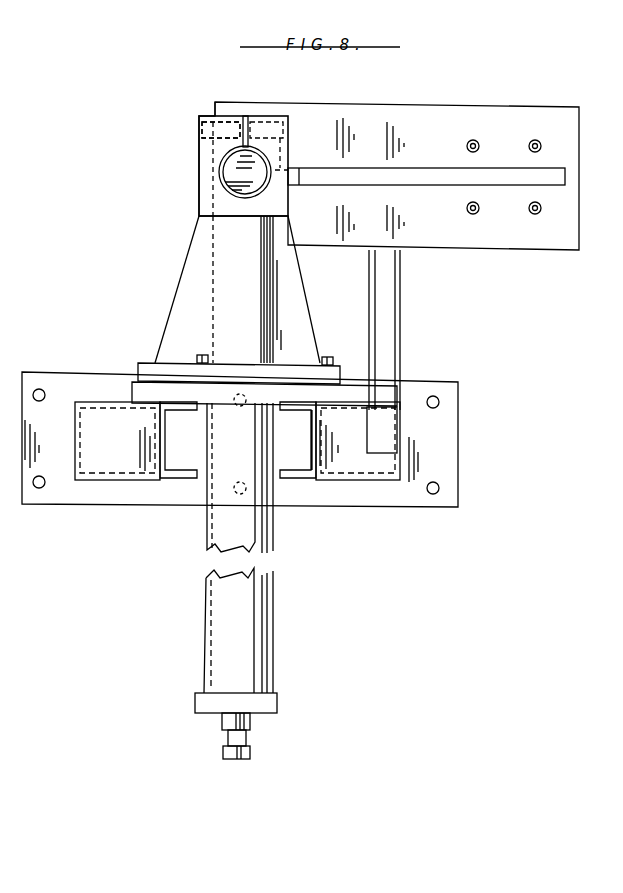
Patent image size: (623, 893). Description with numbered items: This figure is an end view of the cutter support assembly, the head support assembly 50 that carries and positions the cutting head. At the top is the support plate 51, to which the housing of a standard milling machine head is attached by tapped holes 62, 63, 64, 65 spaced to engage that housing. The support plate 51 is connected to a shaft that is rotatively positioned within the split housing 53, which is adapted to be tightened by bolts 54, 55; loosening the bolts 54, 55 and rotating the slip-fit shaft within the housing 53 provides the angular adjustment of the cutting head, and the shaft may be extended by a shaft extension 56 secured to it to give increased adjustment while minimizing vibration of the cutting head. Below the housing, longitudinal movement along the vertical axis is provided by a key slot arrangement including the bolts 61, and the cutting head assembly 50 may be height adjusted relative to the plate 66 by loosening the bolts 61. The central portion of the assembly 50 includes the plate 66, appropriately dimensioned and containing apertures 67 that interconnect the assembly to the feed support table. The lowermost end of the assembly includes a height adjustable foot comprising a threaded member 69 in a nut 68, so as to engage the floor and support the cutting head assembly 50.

The head support assembly 50 is at (162, 272).
The support plate 51 is at (443, 112).
The split housing 53 is at (199, 167).
The bolt 54 is at (198, 128).
The bolt 55 is at (221, 130).
The shaft extension 56 is at (228, 181).
The bolts 61 is at (200, 355).
The tapped hole 62 is at (466, 146).
The tapped hole 63 is at (542, 146).
The tapped hole 64 is at (466, 208).
The tapped hole 65 is at (542, 208).
The plate 66 is at (458, 443).
The apertures 67 is at (43, 389).
The nut 68 is at (503, 107).
The threaded member 69 is at (252, 754).